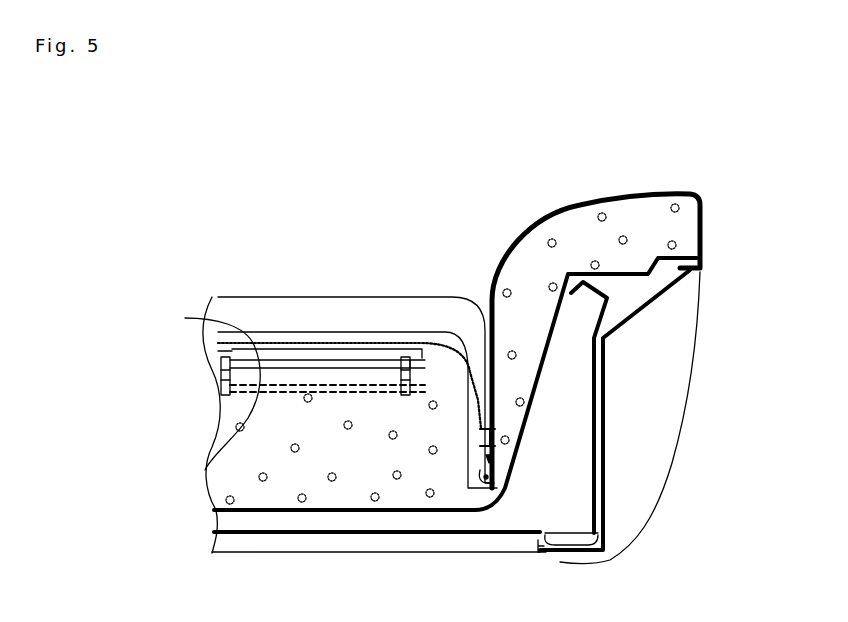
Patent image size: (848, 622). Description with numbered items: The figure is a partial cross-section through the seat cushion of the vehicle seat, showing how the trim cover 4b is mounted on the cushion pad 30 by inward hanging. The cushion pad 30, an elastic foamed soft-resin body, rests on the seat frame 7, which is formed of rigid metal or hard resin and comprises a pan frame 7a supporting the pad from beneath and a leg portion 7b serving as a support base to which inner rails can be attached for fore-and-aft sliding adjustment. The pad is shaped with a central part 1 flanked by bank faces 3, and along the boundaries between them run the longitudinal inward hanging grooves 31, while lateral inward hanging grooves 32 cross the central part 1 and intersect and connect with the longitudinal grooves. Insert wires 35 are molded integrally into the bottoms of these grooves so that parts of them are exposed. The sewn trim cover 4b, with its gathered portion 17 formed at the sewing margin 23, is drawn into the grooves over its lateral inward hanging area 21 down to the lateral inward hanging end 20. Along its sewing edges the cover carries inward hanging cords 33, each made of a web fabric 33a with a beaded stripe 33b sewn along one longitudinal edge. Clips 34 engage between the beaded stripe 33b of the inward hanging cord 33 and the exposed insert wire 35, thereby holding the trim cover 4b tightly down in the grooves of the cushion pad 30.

The central part of seat cushion 1 is at (243, 276).
The bank face 3 is at (623, 182).
The trim cover 4b is at (645, 195).
The seat frame 7 is at (762, 358).
The pan frame 7a is at (600, 397).
The leg portion 7b is at (600, 420).
The gathered portion 17 is at (468, 372).
The lateral inward hanging end 20 is at (450, 342).
The lateral inward hanging area 21 is at (345, 330).
The sewing margin 23 is at (266, 336).
The cushion pad 30 is at (668, 235).
The longitudinal inward hanging groove 31 is at (470, 488).
The lateral inward hanging groove 32 is at (185, 318).
The inward hanging cord 33 is at (96, 388).
The web fabric 33a is at (235, 349).
The beaded stripe 33b is at (222, 363).
The clip 34 is at (222, 386).
The insert wire 35 is at (224, 396).